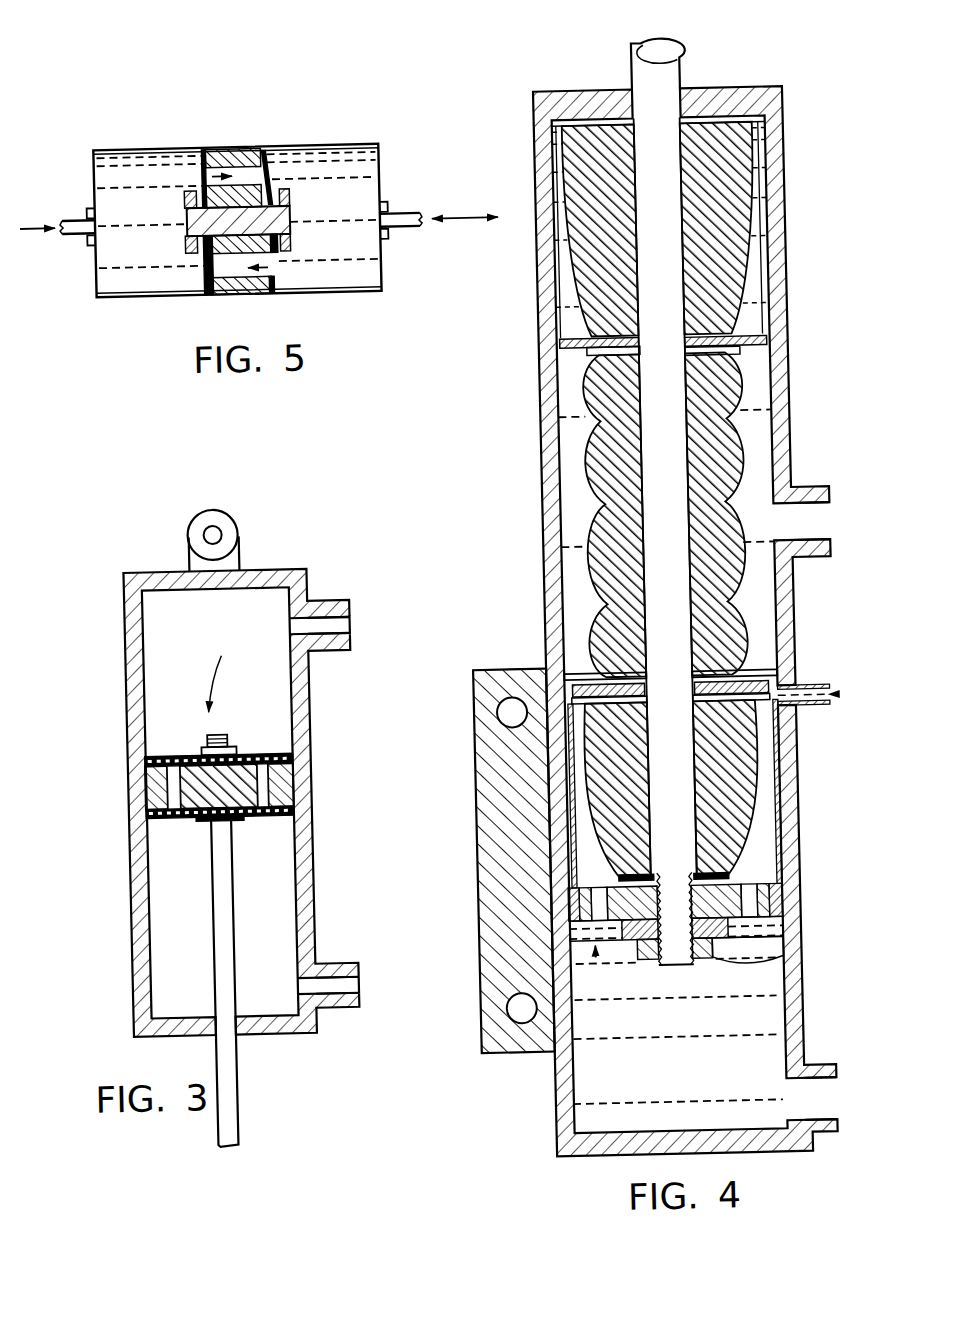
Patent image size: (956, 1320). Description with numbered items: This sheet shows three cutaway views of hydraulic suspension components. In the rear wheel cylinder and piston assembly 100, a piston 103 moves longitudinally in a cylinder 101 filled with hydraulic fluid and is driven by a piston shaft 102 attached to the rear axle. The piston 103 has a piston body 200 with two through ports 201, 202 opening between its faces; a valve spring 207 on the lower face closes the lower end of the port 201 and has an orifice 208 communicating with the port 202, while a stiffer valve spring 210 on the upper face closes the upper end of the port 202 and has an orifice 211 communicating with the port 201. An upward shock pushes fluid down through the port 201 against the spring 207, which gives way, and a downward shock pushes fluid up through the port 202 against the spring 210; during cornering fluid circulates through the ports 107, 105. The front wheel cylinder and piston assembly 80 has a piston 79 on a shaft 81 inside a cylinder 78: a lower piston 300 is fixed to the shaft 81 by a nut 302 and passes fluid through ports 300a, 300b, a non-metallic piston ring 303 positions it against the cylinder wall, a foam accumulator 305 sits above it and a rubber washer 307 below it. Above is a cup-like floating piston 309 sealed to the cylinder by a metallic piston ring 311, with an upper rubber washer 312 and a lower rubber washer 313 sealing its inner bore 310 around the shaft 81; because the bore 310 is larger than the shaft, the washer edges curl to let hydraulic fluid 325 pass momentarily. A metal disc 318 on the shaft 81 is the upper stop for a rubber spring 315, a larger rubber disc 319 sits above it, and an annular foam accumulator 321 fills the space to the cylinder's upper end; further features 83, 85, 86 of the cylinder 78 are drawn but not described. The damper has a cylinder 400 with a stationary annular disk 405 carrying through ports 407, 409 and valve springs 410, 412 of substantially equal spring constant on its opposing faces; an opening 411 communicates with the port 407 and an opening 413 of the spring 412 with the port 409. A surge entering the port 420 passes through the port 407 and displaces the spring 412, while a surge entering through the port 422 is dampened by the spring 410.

In FIG. 5, the cylinder 400 is at (340, 146).
In FIG. 5, the valve spring 412 is at (299, 148).
In FIG. 5, the stationary annular disk 405 is at (232, 148).
In FIG. 5, the through port 407 is at (203, 167).
In FIG. 5, the opening 411 is at (203, 176).
In FIG. 5, the opening 413 is at (283, 252).
In FIG. 5, the through port 409 is at (272, 268).
In FIG. 5, the valve spring 410 is at (205, 288).
In FIG. 5, the port 420 is at (90, 226).
In FIG. 5, the port 422 is at (390, 207).
In FIG. 3, the rear wheel cylinder and piston assembly 100 is at (165, 555).
In FIG. 3, the cylinder 101 is at (128, 640).
In FIG. 3, the port 105 is at (322, 603).
In FIG. 3, the port 107 is at (325, 963).
In FIG. 3, the piston 103 is at (240, 669).
In FIG. 3, the through port 201 is at (172, 757).
In FIG. 3, the through port 202 is at (270, 752).
In FIG. 3, the orifice 211 is at (194, 755).
In FIG. 3, the valve spring 210 is at (252, 752).
In FIG. 3, the piston body 200 is at (193, 820).
In FIG. 3, the valve spring 207 is at (157, 823).
In FIG. 3, the orifice 208 is at (272, 820).
In FIG. 3, the piston shaft 102 is at (234, 962).
In FIG. 4, the front wheel cylinder and piston assembly 80 is at (823, 268).
In FIG. 4, the shaft 81 is at (692, 81).
In FIG. 4, the lower rubber washer 313 is at (548, 669).
In FIG. 4, the annular foam accumulator 321 is at (781, 131).
In FIG. 4, the hydraulic fluid 325 is at (771, 189).
In FIG. 4, the metal disc 318 is at (574, 360).
In FIG. 4, the rubber disc 319 is at (787, 321).
In FIG. 4, the rubber spring 315 is at (751, 390).
In FIG. 4, the port 83 is at (822, 526).
In FIG. 4, the bleed tube 86 is at (838, 698).
In FIG. 4, the lower port 85 is at (812, 1104).
In FIG. 4, the inner bore 310 is at (744, 657).
In FIG. 4, the upper rubber washer 312 is at (769, 668).
In FIG. 4, the metallic piston ring 311 is at (778, 748).
In FIG. 4, the floating piston 309 is at (779, 801).
In FIG. 4, the foam accumulator 305 is at (753, 832).
In FIG. 4, the port 300b is at (754, 872).
In FIG. 4, the port 300a is at (556, 866).
In FIG. 4, the non-metallic piston ring 303 is at (778, 908).
In FIG. 4, the lower piston 300 is at (783, 926).
In FIG. 4, the rubber washer 307 is at (778, 953).
In FIG. 4, the nut 302 is at (752, 977).
In FIG. 4, the piston 79 is at (589, 958).
In FIG. 4, the cylinder 78 is at (791, 1023).